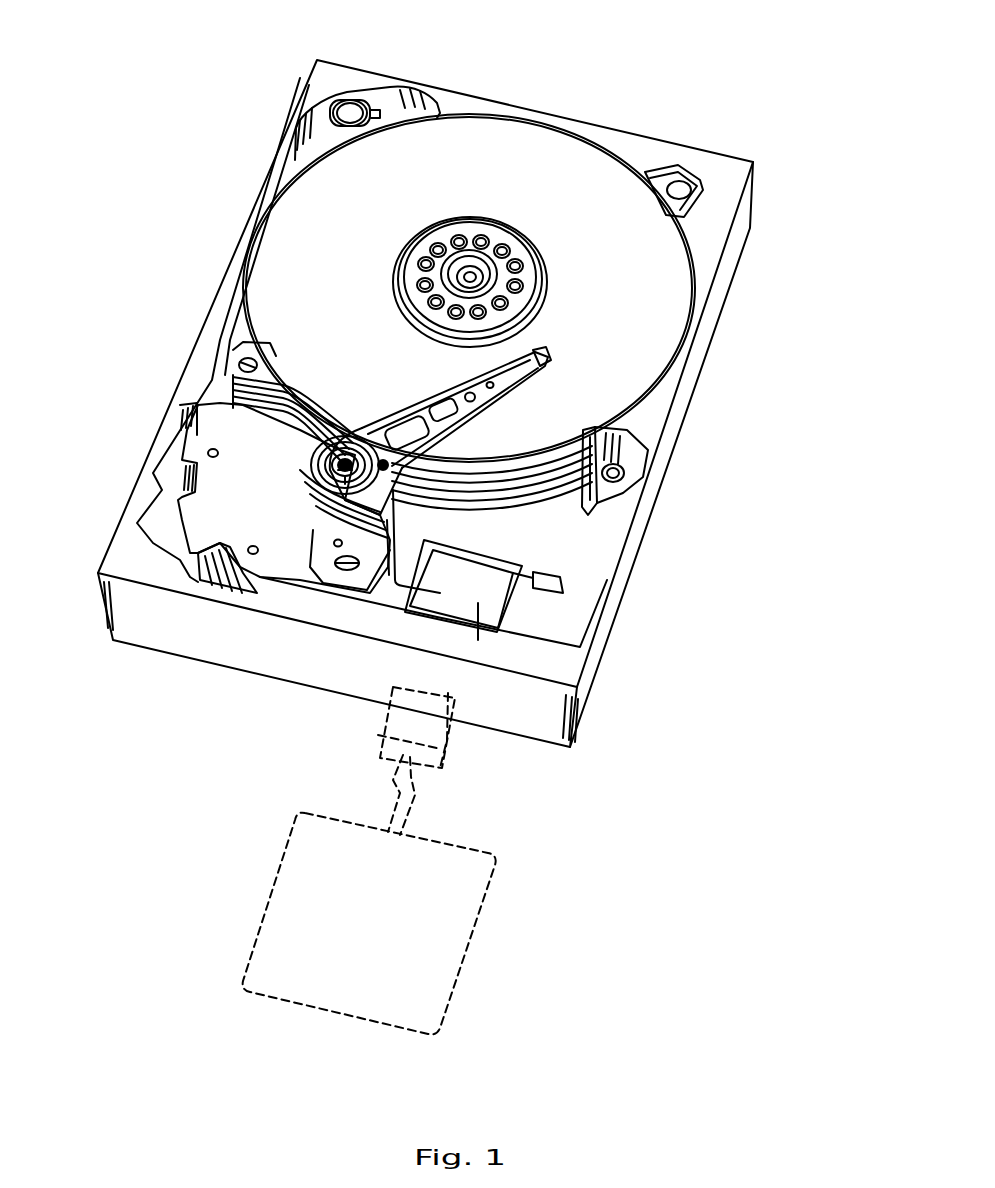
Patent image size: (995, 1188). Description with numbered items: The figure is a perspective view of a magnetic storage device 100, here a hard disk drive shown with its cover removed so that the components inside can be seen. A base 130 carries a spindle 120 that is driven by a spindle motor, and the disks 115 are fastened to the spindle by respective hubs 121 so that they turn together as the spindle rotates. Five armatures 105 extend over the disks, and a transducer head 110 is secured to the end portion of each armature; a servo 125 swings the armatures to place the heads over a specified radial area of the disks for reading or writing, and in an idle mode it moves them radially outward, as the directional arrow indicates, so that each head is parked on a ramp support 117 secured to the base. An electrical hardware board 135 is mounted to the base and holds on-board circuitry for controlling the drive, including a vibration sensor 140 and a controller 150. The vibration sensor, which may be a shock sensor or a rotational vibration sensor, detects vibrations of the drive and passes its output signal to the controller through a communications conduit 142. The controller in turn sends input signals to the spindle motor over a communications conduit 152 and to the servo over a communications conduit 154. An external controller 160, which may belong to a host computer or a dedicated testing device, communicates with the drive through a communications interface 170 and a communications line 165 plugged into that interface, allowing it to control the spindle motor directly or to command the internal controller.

The magnetic storage device 100 is at (622, 112).
The armature 105 is at (420, 413).
The transducer head 110 is at (622, 342).
The disk 115 is at (627, 393).
The ramp support 117 is at (592, 488).
The spindle 120 is at (470, 277).
The hub 121 is at (535, 302).
The servo 125 is at (330, 462).
The base 130 is at (647, 433).
The electrical hardware board 135 is at (560, 635).
The vibration sensor 140 is at (577, 575).
The communications conduit 142 is at (523, 587).
The controller 150 is at (478, 603).
The communications conduit 152 is at (405, 508).
The communications conduit 154 is at (448, 490).
The external controller 160 is at (480, 918).
The communications line 165 is at (447, 727).
The communications interface 170 is at (393, 688).